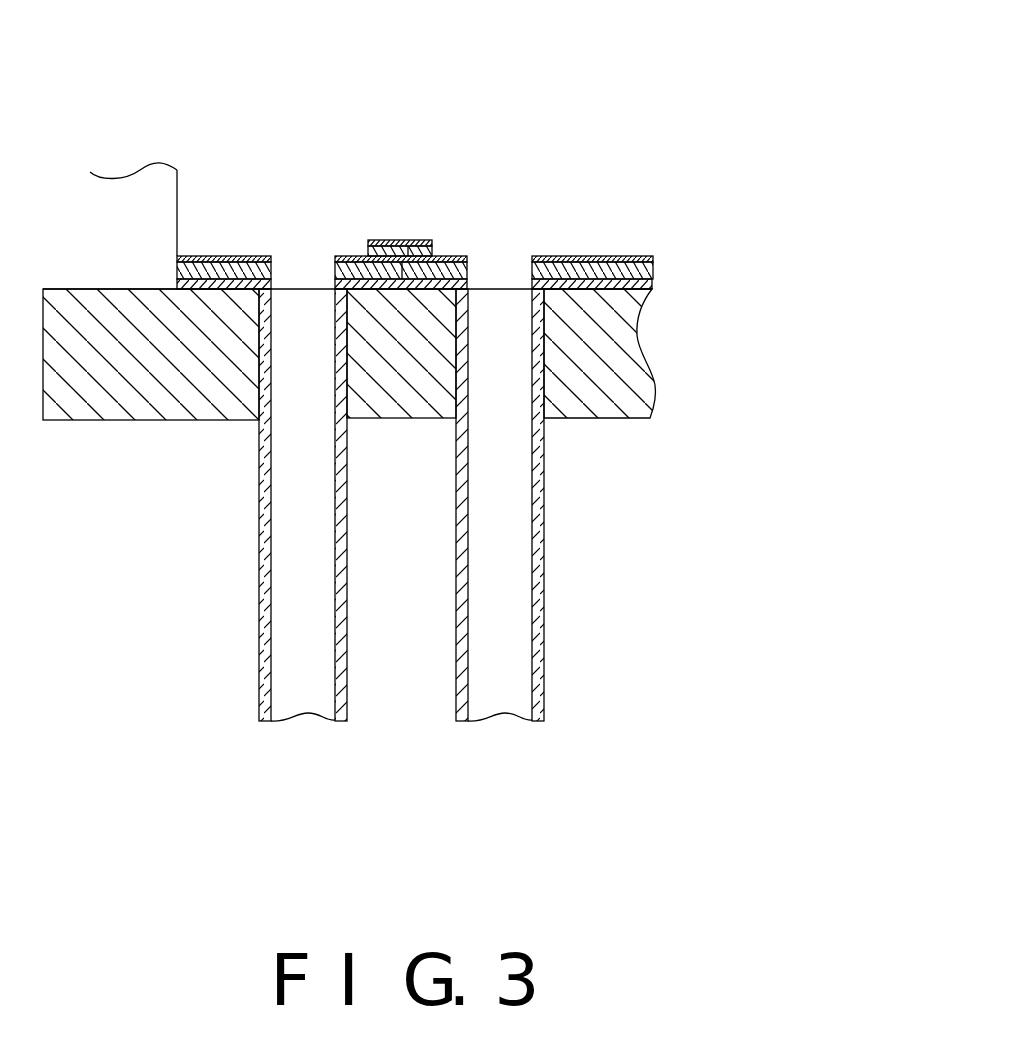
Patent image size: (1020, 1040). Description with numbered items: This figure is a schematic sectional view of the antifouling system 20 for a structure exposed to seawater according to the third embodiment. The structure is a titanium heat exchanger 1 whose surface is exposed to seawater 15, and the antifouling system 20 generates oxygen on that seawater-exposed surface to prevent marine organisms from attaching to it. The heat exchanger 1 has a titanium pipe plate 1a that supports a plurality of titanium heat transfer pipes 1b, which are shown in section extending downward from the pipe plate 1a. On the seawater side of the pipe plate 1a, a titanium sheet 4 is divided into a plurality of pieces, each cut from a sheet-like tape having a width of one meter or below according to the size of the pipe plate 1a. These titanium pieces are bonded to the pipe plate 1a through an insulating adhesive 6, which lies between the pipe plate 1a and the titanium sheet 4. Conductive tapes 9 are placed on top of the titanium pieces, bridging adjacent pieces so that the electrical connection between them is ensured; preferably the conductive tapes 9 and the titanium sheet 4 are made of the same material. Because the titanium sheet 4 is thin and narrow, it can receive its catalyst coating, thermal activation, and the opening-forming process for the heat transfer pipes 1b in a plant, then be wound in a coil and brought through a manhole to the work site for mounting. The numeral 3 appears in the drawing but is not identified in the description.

The seawater 15 is at (548, 57).
The titanium heat exchanger 1 is at (583, 432).
The titanium pipe plate 1a is at (631, 370).
The titanium heat transfer pipes 1b is at (348, 604).
The antifouling system 20 is at (582, 216).
The top electrode layer 3 is at (347, 256).
The titanium sheet 4 is at (468, 270).
The insulating adhesive 6 is at (336, 288).
The conductive tapes 9 is at (408, 249).